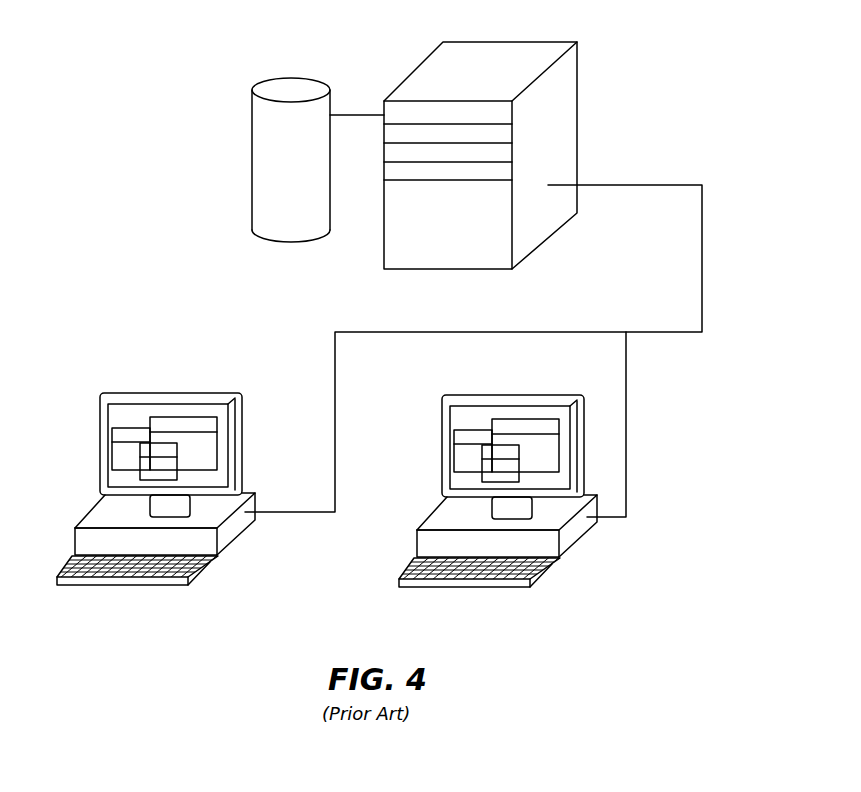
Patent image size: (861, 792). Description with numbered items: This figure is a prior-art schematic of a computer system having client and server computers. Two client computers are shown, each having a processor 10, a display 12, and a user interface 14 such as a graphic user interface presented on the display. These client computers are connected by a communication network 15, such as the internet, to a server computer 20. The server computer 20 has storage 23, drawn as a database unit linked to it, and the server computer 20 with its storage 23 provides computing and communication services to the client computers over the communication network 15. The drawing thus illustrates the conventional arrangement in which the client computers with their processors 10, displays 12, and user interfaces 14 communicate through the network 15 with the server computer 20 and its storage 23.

The processor 10 is at (341, 468).
The display 12 is at (130, 413).
The user interface 14 is at (103, 448).
The communication network 15 is at (702, 247).
The server computer 20 is at (577, 80).
The storage 23 is at (252, 142).